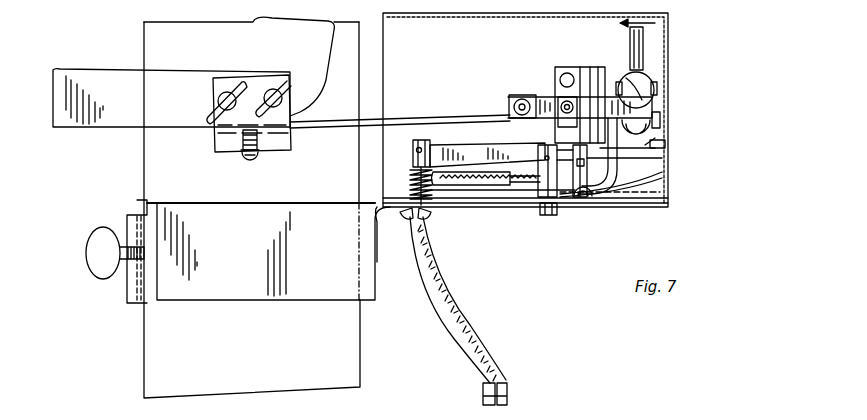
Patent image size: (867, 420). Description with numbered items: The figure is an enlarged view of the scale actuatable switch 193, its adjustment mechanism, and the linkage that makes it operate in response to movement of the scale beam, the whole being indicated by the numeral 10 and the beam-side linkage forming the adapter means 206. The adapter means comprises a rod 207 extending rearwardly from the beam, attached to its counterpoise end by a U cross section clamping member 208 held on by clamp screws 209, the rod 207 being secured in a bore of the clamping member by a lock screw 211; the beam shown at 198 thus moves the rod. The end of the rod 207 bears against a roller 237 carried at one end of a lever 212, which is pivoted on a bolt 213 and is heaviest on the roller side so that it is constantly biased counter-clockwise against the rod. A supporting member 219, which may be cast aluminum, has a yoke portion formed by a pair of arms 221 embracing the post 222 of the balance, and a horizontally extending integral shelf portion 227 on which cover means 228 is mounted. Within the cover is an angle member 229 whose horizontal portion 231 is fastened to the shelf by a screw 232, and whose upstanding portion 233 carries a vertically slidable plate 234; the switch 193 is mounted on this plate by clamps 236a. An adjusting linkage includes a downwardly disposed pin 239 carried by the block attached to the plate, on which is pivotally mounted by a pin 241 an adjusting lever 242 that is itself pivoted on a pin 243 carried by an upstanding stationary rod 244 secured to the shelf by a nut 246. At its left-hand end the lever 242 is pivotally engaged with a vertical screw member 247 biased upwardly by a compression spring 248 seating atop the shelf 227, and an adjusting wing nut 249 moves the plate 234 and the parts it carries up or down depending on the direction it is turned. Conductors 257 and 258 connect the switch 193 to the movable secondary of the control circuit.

The arm 198 is at (88, 68).
The clamping member 208 is at (234, 104).
The clamp screws 209 is at (212, 113).
The lock screw 211 is at (245, 153).
The rod 207 is at (405, 120).
The roller 237 is at (515, 100).
The lever 212 is at (545, 97).
The bolt 213 is at (598, 180).
The plate 234 is at (607, 65).
The flow direction 10 is at (652, 23).
The scale actuatable switch 193 is at (680, 83).
The cover means 228 is at (670, 53).
The clamps 236a is at (660, 118).
The upstanding portion 233 is at (660, 148).
The pin 239 is at (655, 158).
The angle member 229 is at (655, 178).
The horizontal portion 231 is at (655, 192).
The adjusting lever 242 is at (475, 160).
The pin 243 is at (548, 158).
The vertical screw member 247 is at (413, 150).
The compression spring 248 is at (412, 190).
The stationary rod 244 is at (546, 168).
The nut 246 is at (551, 178).
The shelf portion 227 is at (462, 200).
The pin 241 is at (580, 165).
The screw 232 is at (583, 192).
The supporting member 219 is at (380, 215).
The adjusting wing nut 249 is at (413, 227).
The arms 221 is at (272, 302).
The post 222 is at (362, 353).
The adapter means 206 is at (505, 275).
The conductor 258 is at (485, 392).
The conductor 257 is at (510, 392).